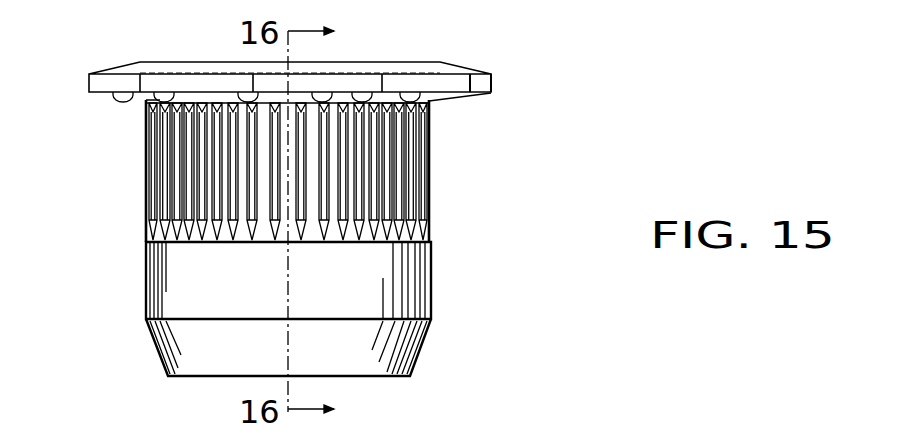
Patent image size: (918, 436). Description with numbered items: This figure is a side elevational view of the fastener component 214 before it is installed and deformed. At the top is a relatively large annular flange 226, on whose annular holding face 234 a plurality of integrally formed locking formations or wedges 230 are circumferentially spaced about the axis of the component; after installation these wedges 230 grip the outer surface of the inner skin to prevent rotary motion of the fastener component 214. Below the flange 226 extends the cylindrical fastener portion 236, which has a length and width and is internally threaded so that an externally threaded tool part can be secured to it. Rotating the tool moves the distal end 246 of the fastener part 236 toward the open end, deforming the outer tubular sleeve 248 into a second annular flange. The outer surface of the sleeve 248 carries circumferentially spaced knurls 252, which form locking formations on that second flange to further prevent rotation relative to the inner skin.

The fastener component 214 is at (471, 62).
The annular flange 226 is at (492, 83).
The locking formations or wedges 230 is at (262, 97).
The annular holding face 234 is at (335, 95).
The cylindrical fastener portion 236 is at (432, 278).
The distal end 246 is at (420, 355).
The outer tubular sleeve 248 is at (432, 206).
The knurls 252 is at (250, 147).